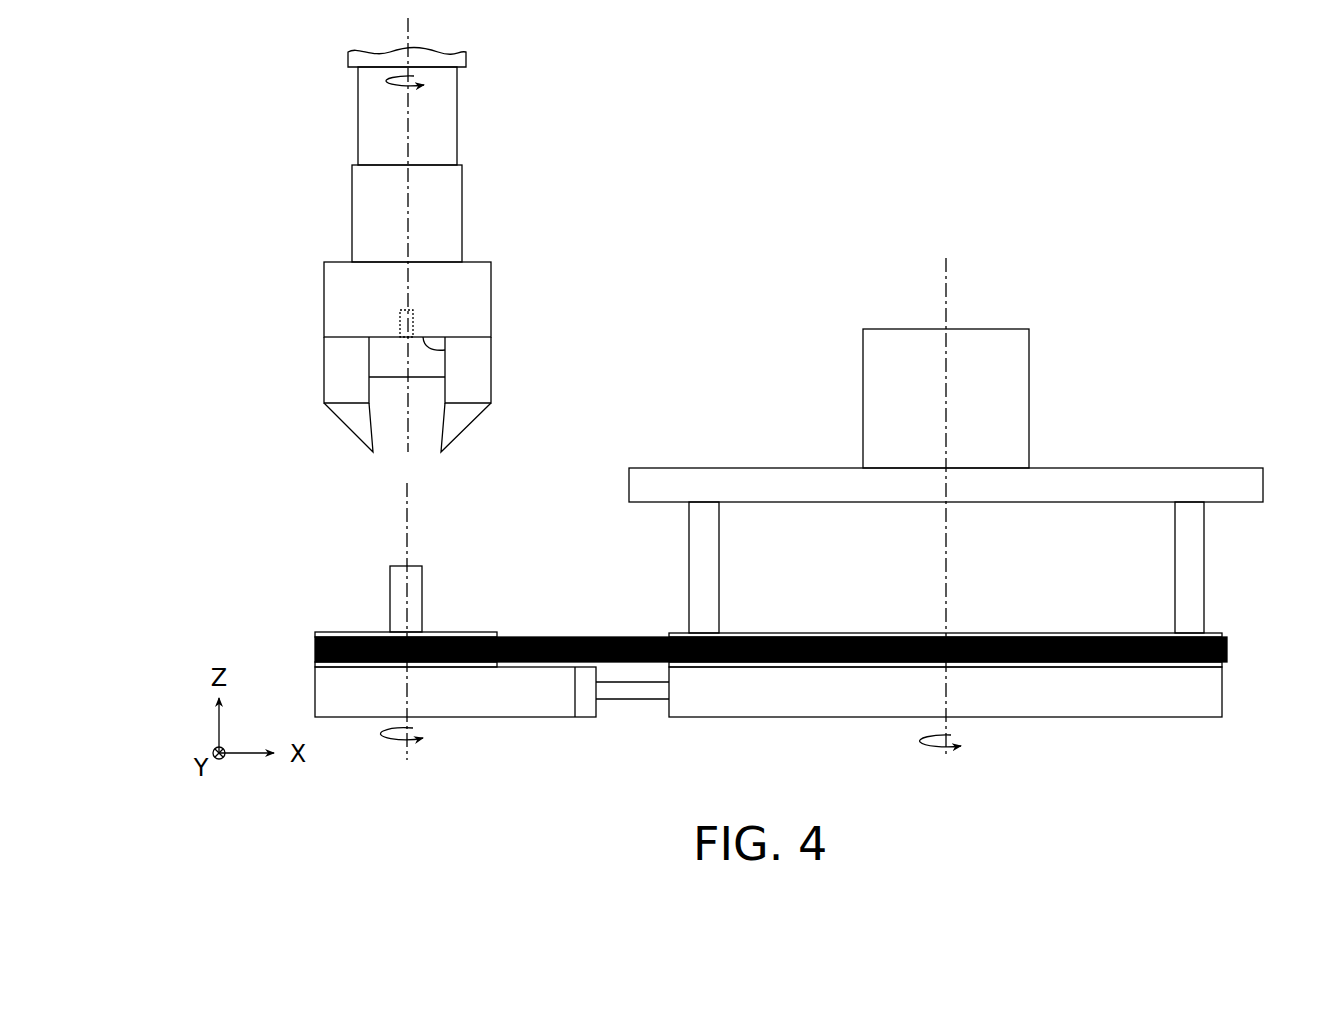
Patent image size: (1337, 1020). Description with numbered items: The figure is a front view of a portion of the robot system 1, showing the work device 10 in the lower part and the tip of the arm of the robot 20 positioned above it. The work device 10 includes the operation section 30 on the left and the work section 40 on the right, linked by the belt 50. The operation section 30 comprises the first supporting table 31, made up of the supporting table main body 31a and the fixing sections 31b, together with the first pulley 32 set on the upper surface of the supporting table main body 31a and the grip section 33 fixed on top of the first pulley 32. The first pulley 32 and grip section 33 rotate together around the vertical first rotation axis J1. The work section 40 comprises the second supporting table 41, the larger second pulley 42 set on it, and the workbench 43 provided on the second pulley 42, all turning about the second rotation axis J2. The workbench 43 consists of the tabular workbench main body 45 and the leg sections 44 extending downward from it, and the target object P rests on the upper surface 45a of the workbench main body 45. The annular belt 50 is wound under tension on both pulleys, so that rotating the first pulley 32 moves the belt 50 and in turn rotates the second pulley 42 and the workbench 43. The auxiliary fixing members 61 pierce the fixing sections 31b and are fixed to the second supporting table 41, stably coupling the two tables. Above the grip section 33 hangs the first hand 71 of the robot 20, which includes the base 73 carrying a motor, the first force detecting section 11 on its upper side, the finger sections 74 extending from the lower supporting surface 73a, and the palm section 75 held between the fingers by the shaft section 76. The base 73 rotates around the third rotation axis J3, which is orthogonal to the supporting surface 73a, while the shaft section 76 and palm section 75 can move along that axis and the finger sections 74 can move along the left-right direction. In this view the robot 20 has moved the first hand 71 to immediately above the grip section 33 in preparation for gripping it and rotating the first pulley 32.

The robot system 1 is at (1186, 117).
The work device 10 is at (968, 482).
The first force detecting section 11 is at (362, 198).
The robot 20 is at (450, 235).
The operation section 30 is at (428, 632).
The first supporting table 31 is at (428, 707).
The supporting table main body 31a is at (492, 705).
The fixing sections 31b is at (586, 705).
The first pulley 32 is at (463, 632).
The grip section 33 is at (398, 584).
The work section 40 is at (968, 571).
The second supporting table 41 is at (1157, 707).
The second pulley 42 is at (1187, 667).
The workbench 43 is at (689, 460).
The leg sections 44 is at (722, 565).
The workbench main body 45 is at (1247, 477).
The upper surface 45a is at (1208, 468).
The belt 50 is at (843, 655).
The auxiliary fixing members 61 is at (651, 690).
The first hand 71 is at (414, 338).
The base 73 is at (337, 283).
The supporting surface 73a is at (440, 350).
The finger sections 74 is at (340, 360).
The palm section 75 is at (430, 360).
The shaft section 76 is at (410, 322).
The target object P is at (1010, 357).
The first rotation axis J1 is at (407, 500).
The second rotation axis J2 is at (946, 262).
The third rotation axis J3 is at (408, 127).